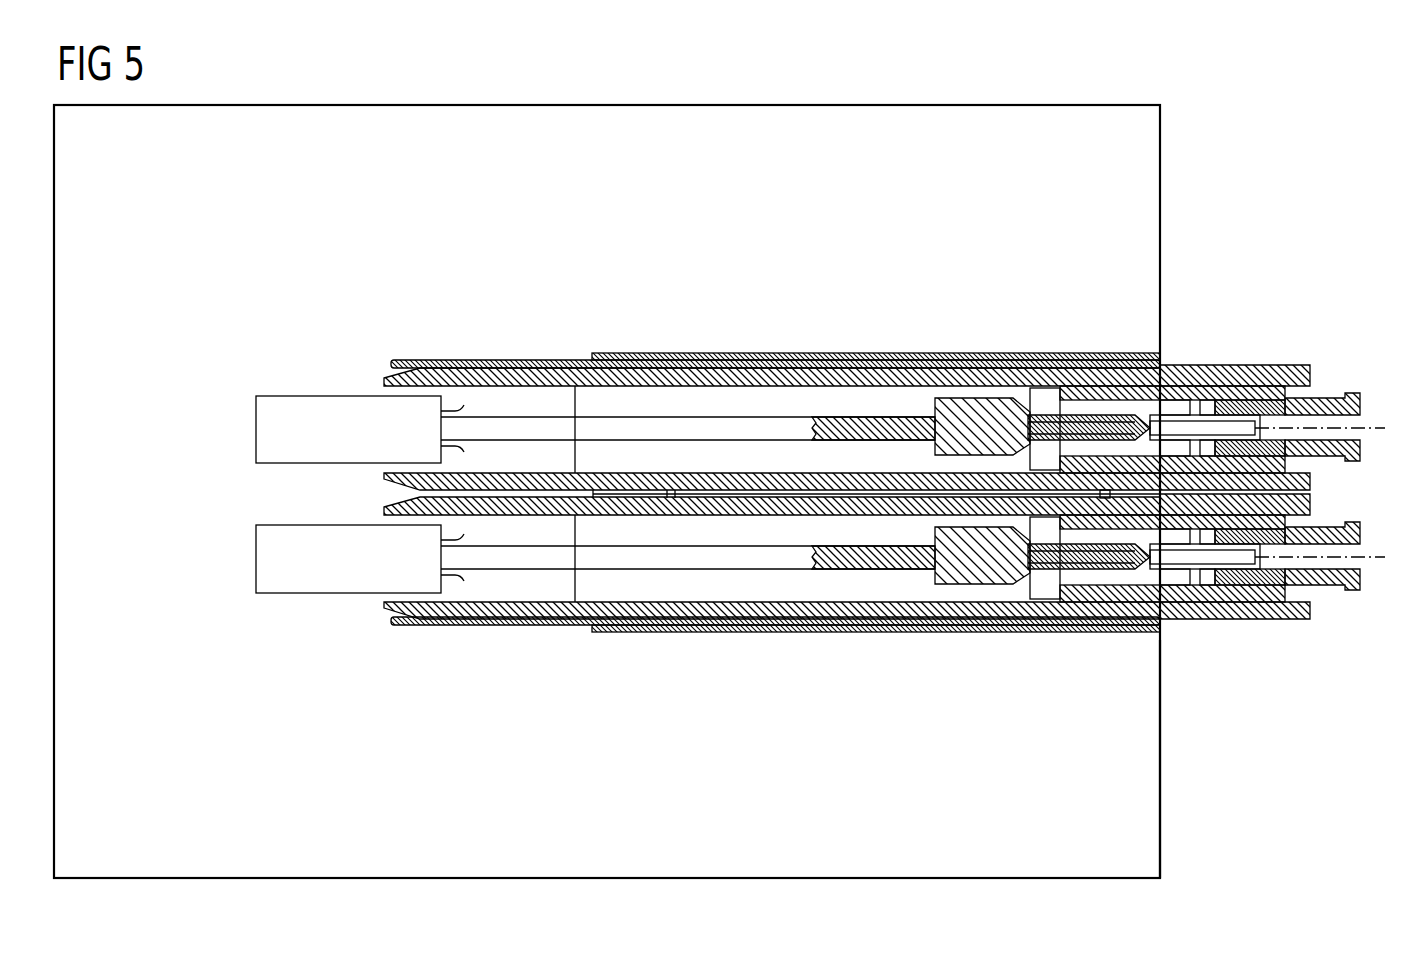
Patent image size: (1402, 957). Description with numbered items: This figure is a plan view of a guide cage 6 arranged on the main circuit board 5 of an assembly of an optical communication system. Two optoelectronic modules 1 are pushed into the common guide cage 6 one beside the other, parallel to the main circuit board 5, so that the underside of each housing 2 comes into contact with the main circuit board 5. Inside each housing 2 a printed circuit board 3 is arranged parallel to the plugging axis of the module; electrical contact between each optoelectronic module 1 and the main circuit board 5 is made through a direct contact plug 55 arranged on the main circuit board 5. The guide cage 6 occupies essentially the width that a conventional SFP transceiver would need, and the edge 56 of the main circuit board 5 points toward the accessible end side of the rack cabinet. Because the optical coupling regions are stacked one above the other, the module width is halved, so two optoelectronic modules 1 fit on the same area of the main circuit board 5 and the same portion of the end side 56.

The optoelectronic module 1 is at (1324, 346).
The housing 2 is at (488, 368).
The printed circuit board 3 is at (557, 426).
The main circuit board 5 is at (1140, 175).
The guide cage 6 is at (402, 361).
The direct contact plug 55 is at (270, 430).
The edge of the main circuit board 56 is at (1180, 757).